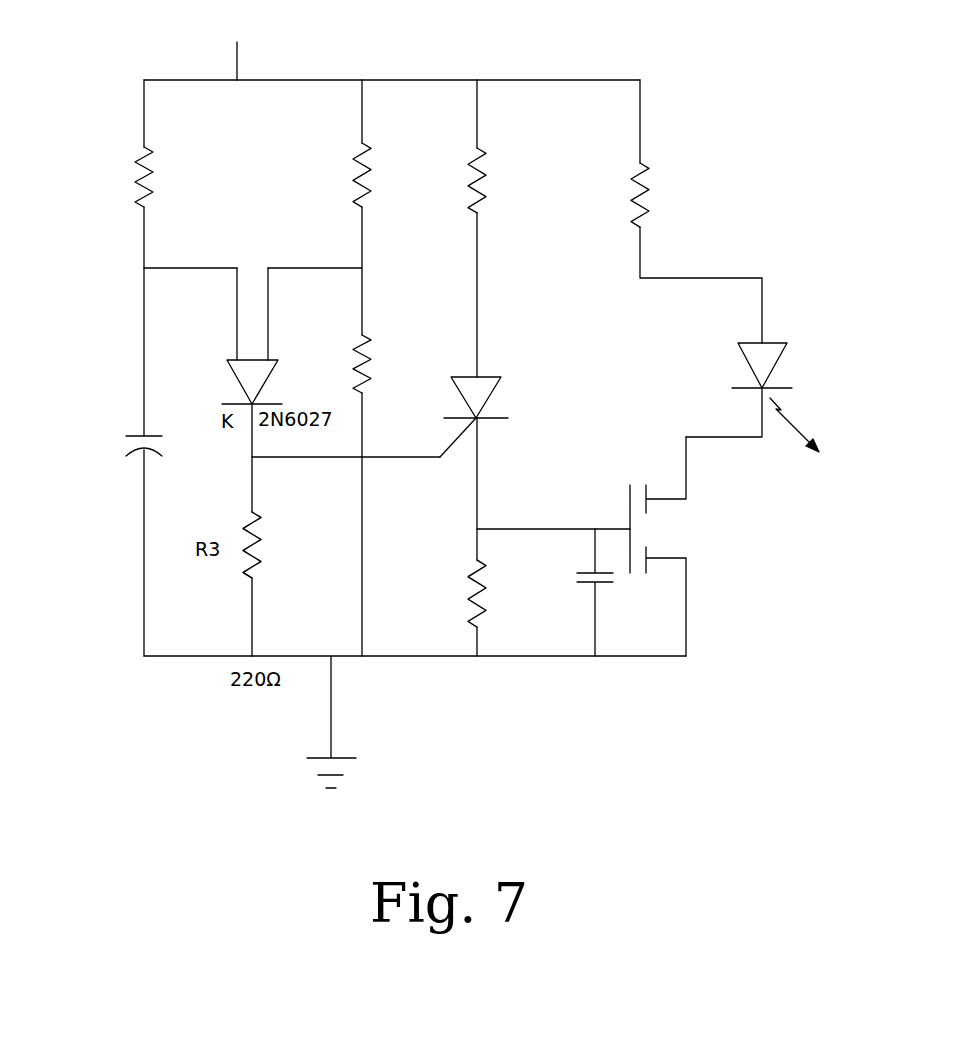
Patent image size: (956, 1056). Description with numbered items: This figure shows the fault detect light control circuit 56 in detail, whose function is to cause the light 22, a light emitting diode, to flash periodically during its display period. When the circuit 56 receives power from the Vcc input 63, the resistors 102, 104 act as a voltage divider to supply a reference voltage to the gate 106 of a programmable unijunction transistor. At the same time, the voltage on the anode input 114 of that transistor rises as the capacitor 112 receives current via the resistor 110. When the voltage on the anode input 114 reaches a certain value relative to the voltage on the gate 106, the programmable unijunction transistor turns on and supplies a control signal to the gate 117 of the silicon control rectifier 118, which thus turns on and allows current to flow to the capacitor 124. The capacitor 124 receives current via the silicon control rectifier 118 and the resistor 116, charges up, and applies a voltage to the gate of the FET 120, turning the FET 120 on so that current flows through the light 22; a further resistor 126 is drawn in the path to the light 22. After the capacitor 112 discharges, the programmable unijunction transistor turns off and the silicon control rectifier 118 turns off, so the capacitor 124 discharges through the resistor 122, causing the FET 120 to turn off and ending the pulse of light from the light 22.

The Vcc input 63 is at (236, 45).
The resistor 110 is at (154, 207).
The capacitor 112 is at (134, 430).
The anode input 114 is at (236, 358).
The gate 106 is at (269, 358).
The resistor 102 is at (372, 207).
The resistor 104 is at (355, 355).
The resistor 116 is at (489, 213).
The silicon control rectifier 118 is at (450, 384).
The gate 117 is at (470, 423).
The resistor 122 is at (468, 615).
The capacitor 124 is at (586, 572).
The FET 120 is at (628, 500).
The resistor R6 126 is at (651, 227).
The light 22 is at (735, 353).
The fault detect light control circuit 56 is at (532, 749).